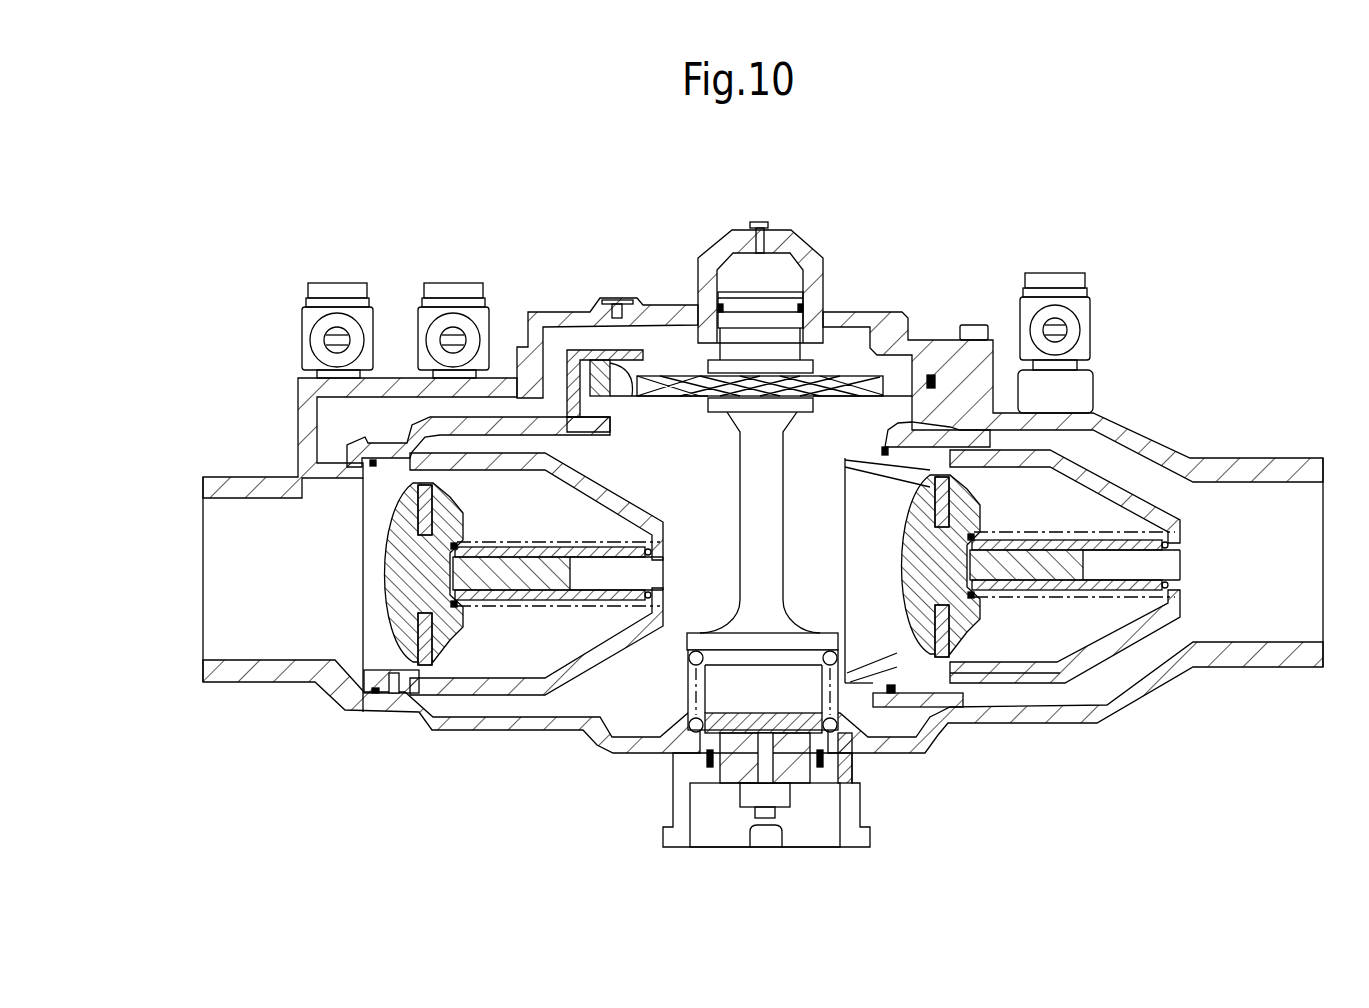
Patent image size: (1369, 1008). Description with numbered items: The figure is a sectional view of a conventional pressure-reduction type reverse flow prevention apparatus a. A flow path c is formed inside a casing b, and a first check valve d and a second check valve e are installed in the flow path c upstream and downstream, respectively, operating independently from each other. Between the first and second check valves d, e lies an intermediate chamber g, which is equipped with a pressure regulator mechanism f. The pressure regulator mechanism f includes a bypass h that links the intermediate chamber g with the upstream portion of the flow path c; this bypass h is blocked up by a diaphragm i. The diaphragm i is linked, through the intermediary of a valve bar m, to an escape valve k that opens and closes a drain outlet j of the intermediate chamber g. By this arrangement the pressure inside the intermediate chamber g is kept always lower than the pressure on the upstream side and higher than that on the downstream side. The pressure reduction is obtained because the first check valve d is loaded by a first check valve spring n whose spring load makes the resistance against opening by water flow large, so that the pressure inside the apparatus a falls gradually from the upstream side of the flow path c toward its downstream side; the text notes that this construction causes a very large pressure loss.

The pressure-reduction type reverse flow prevention apparatus a is at (855, 297).
The casing b is at (548, 722).
The flow path c is at (250, 582).
The first check valve d is at (400, 592).
The second check valve e is at (905, 690).
The pressure regulator mechanism f is at (713, 458).
The intermediate chamber g is at (827, 437).
The bypass h is at (505, 410).
The diaphragm i is at (588, 360).
The drain outlet j is at (717, 827).
The escape valve k is at (690, 720).
The valve bar m is at (763, 540).
The first check valve spring n is at (459, 598).